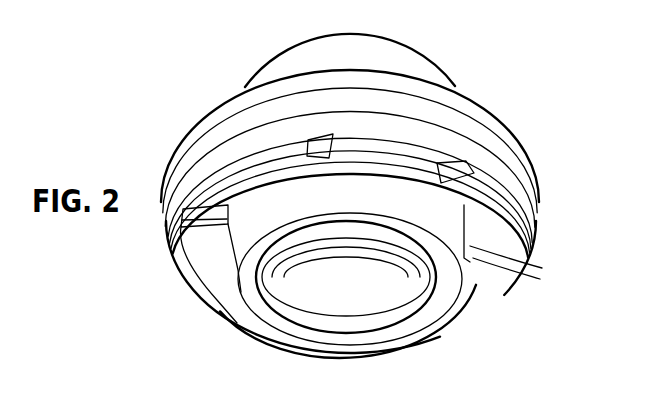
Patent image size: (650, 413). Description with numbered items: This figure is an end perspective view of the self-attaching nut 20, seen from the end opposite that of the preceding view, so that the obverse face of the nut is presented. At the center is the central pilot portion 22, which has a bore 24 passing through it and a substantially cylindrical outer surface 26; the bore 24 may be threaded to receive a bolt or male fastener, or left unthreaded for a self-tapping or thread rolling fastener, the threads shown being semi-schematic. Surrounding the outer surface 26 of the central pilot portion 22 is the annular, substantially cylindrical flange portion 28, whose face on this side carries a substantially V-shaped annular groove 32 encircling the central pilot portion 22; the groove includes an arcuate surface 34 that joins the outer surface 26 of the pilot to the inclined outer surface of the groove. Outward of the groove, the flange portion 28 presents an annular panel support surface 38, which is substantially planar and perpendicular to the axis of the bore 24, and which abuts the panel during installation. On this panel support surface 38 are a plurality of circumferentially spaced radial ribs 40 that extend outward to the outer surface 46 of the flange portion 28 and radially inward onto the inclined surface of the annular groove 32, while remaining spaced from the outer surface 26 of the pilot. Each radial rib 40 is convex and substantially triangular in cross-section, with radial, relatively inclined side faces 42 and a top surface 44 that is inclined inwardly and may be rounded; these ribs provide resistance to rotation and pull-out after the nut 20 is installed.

The self-attaching nut 20 is at (455, 53).
The central pilot portion 22 is at (447, 322).
The bore 24 is at (345, 330).
The outer surface 26 is at (357, 202).
The flange portion 28 is at (503, 148).
The annular groove 32 is at (209, 238).
The arcuate surface 34 is at (231, 198).
The annular panel support surface 38 is at (190, 272).
The radial ribs 40 is at (127, 0).
The inclined side faces 42 is at (356, 202).
The top surface 44 is at (330, 140).
The outer surface 46 is at (199, 150).